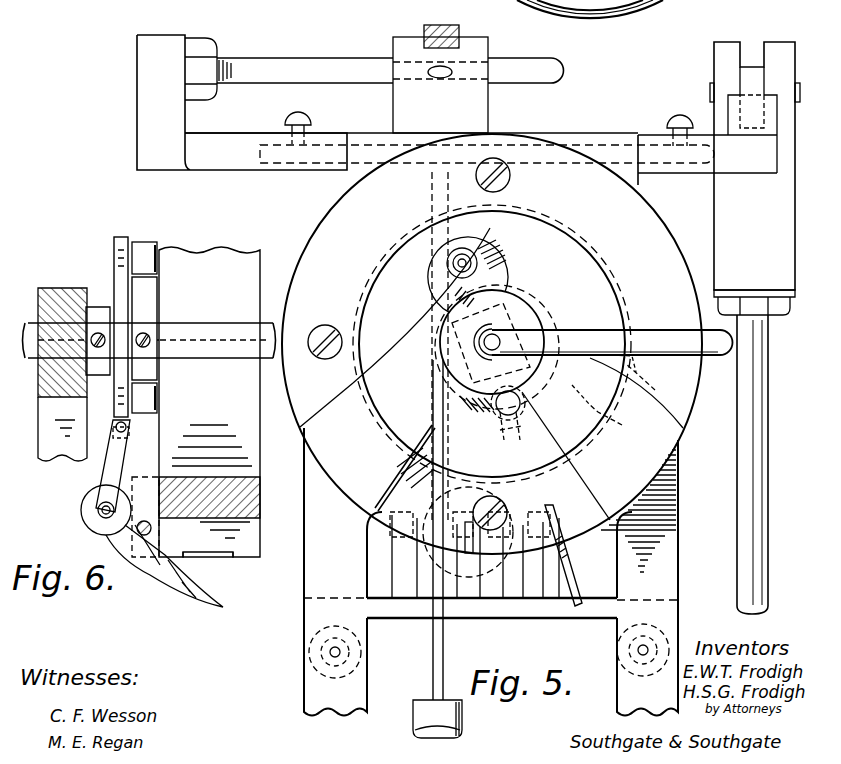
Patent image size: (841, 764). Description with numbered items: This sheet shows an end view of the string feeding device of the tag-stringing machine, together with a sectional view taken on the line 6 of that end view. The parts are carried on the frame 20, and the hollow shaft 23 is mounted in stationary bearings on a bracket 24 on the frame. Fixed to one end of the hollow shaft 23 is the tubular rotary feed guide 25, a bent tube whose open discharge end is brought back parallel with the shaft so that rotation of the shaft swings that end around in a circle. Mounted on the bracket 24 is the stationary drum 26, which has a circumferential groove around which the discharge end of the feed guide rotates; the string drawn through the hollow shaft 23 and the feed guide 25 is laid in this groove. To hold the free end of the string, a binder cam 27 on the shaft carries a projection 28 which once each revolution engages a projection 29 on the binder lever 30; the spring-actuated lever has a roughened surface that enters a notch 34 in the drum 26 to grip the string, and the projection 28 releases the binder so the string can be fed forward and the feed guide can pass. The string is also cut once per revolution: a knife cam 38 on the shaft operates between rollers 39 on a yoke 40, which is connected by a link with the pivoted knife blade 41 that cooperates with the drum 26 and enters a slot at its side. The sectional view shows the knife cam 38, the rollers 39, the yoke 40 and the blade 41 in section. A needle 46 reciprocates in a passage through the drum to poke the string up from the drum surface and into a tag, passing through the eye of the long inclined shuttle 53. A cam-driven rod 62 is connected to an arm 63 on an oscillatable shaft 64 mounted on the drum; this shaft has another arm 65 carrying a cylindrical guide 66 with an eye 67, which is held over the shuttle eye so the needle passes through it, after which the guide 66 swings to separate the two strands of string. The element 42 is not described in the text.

In FIG. 5, the section line 6 is at (462, 262).
In FIG. 5, the frame 20 is at (306, 690).
In FIG. 6, the hollow shaft 23 is at (222, 333).
In FIG. 5, the bracket 24 is at (410, 352).
In FIG. 5, the tubular rotary feed guide 25 is at (684, 364).
In FIG. 5, the stationary drum 26 is at (337, 205).
In FIG. 6, the stationary drum 26 is at (240, 246).
In FIG. 5, the binder cam 27 is at (610, 417).
In FIG. 5, the cam projection 28 is at (647, 382).
In FIG. 5, the binder lever projection 29 is at (472, 560).
In FIG. 5, the binder lever 30 is at (440, 565).
In FIG. 5, the notch 34 is at (467, 535).
In FIG. 5, the knife cam 38 is at (527, 300).
In FIG. 6, the knife cam 38 is at (150, 292).
In FIG. 5, the rollers 39 is at (480, 254).
In FIG. 6, the rollers 39 is at (143, 244).
In FIG. 5, the yoke 40 is at (505, 270).
In FIG. 6, the yoke 40 is at (116, 250).
In FIG. 5, the knife blade 41 is at (566, 588).
In FIG. 6, the knife blade 41 is at (190, 594).
In FIG. 6, the stop lug 42 is at (215, 548).
In FIG. 5, the needle 46 is at (432, 432).
In FIG. 5, the shuttle 53 is at (432, 35).
In FIG. 5, the rod 62 is at (757, 383).
In FIG. 5, the arm 63 is at (752, 82).
In FIG. 5, the oscillatable shaft 64 is at (646, 150).
In FIG. 5, the arm 65 is at (150, 77).
In FIG. 5, the cylindrical guide 66 is at (252, 64).
In FIG. 5, the eye 67 is at (440, 80).